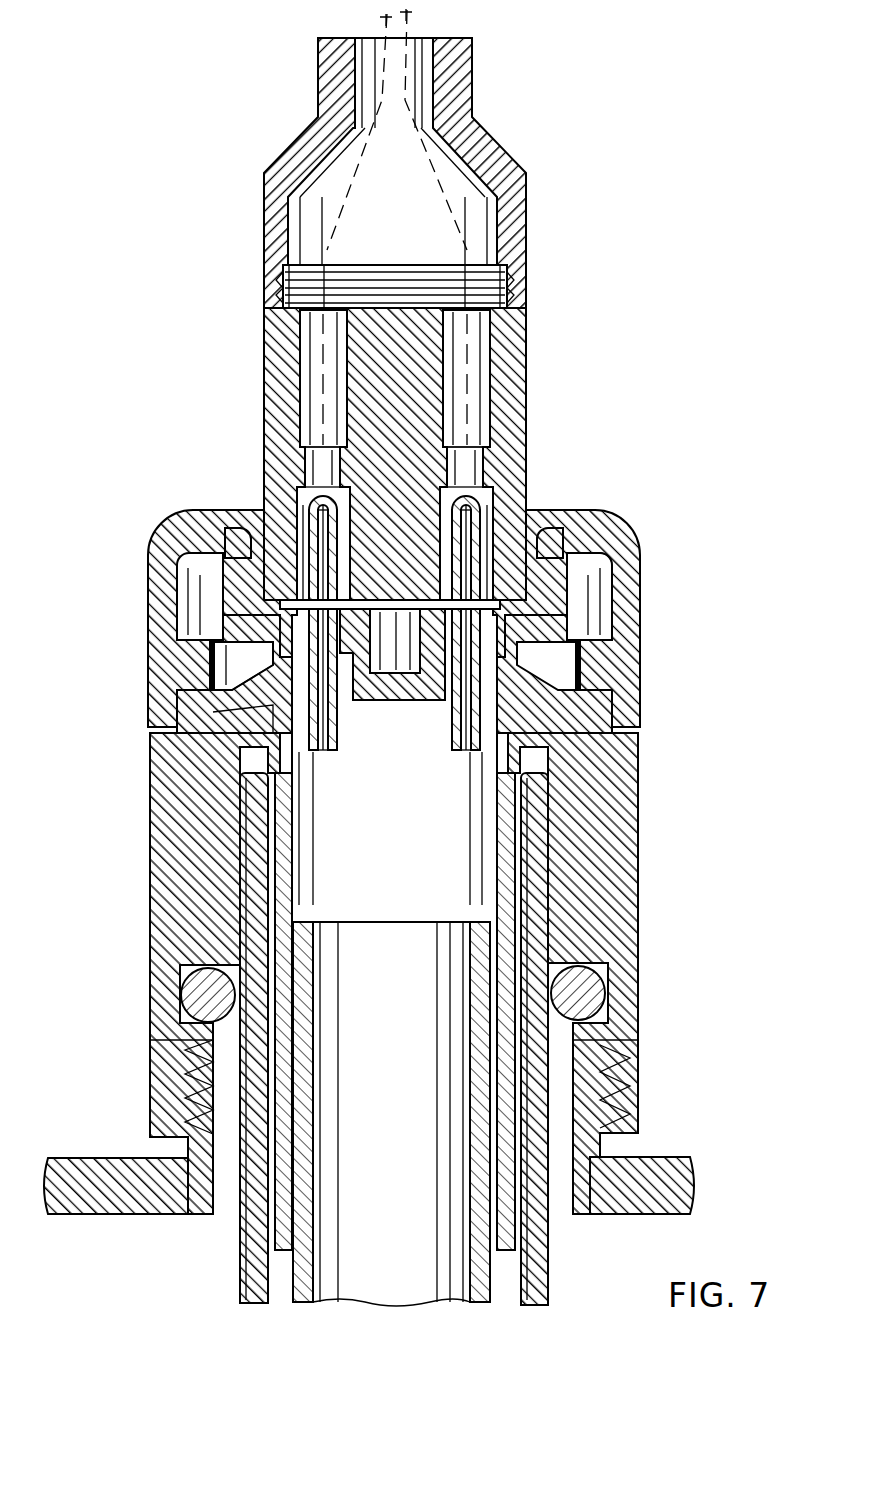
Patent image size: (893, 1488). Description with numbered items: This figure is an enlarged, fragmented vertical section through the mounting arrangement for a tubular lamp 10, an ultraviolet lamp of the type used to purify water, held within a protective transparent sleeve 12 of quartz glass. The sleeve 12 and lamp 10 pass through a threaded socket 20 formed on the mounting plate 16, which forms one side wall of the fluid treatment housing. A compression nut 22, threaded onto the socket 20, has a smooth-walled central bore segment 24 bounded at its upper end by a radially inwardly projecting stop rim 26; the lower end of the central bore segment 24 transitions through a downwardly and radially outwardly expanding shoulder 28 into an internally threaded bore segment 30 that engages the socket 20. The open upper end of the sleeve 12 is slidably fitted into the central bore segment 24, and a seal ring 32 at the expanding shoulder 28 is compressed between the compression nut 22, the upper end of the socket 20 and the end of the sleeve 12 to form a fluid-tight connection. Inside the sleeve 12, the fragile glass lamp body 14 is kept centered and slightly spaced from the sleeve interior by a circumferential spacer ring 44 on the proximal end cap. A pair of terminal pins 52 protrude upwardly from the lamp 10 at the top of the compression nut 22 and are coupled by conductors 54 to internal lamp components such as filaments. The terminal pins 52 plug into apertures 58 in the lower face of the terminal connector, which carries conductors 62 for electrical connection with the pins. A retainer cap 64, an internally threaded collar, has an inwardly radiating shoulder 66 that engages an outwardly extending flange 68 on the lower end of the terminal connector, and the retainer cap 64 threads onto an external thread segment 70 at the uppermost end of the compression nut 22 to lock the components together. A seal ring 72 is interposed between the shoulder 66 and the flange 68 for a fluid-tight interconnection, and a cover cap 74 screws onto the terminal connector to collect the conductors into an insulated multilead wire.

The tubular lamp 10 is at (497, 1303).
The transparent sleeve 12 is at (540, 858).
The glass lamp body 14 is at (300, 973).
The mounting plate 16 is at (673, 1155).
The threaded socket 20 is at (597, 1083).
The compression nut 22 is at (632, 903).
The central bore segment 24 is at (252, 868).
The stop rim 26 is at (510, 795).
The expanding shoulder 28 is at (238, 957).
The internally threaded bore segment 30 is at (188, 1106).
The seal ring 32 is at (200, 990).
The spacer ring 44 is at (548, 1180).
The terminal pins 52 is at (305, 540).
The conductors 54 is at (322, 812).
The apertures 58 is at (503, 465).
The conductors 62 is at (327, 387).
The retainer cap 64 is at (633, 622).
The shoulder 66 is at (160, 552).
The flange 68 is at (590, 588).
The external thread segment 70 is at (185, 695).
The seal ring 72 is at (228, 544).
The cover cap 74 is at (497, 168).